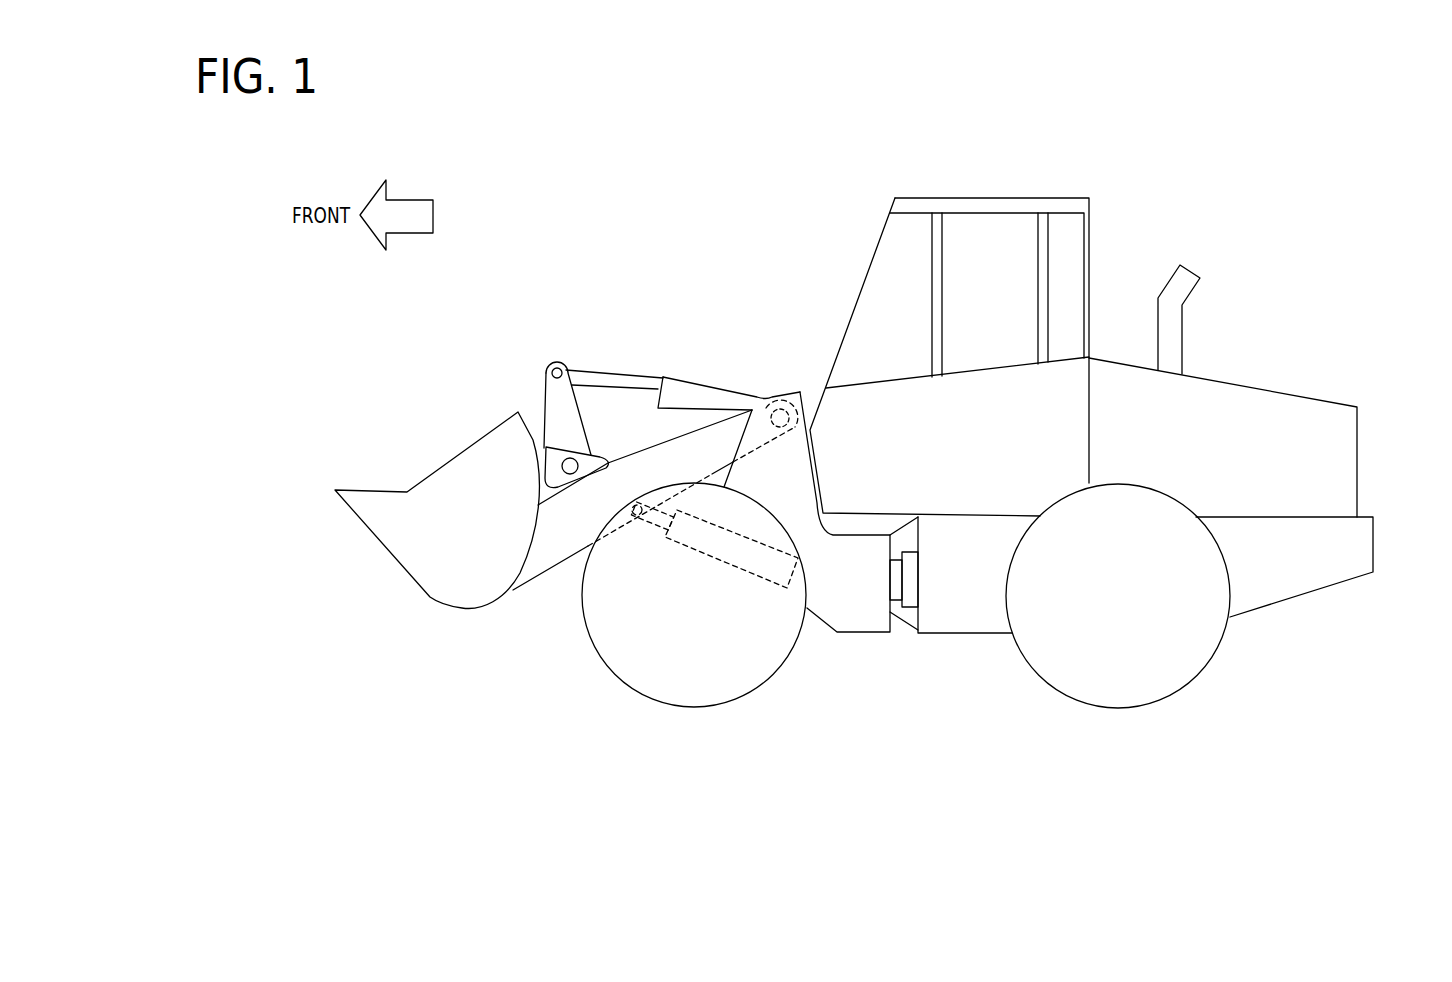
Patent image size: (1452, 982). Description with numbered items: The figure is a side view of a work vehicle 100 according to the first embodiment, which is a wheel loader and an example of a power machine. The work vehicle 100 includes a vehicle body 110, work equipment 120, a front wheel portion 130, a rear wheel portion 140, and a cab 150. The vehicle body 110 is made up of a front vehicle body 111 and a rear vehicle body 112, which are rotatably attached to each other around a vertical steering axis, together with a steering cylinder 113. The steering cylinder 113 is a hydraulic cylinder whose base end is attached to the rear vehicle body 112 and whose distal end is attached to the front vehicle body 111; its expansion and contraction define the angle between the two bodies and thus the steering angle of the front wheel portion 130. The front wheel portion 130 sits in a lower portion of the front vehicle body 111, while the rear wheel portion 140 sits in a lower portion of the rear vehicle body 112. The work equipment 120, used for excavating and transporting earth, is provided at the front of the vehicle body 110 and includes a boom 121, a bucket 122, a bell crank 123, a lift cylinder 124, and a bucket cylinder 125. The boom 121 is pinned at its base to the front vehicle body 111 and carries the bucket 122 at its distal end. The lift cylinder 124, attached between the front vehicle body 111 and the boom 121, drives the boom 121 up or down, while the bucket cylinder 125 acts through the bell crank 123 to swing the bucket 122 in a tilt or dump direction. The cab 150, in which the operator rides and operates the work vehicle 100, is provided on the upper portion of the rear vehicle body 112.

The work vehicle 100 is at (1209, 148).
The vehicle body 110 is at (878, 740).
The front vehicle body 111 is at (857, 638).
The rear vehicle body 112 is at (984, 636).
The steering cylinder 113 is at (910, 610).
The work equipment 120 is at (434, 382).
The boom 121 is at (540, 583).
The bucket 122 is at (432, 606).
The bell crank 123 is at (553, 360).
The lift cylinder 124 is at (716, 562).
The bucket cylinder 125 is at (689, 380).
The front wheel portion 130 is at (678, 708).
The rear wheel portion 140 is at (1107, 710).
The cab 150 is at (937, 197).